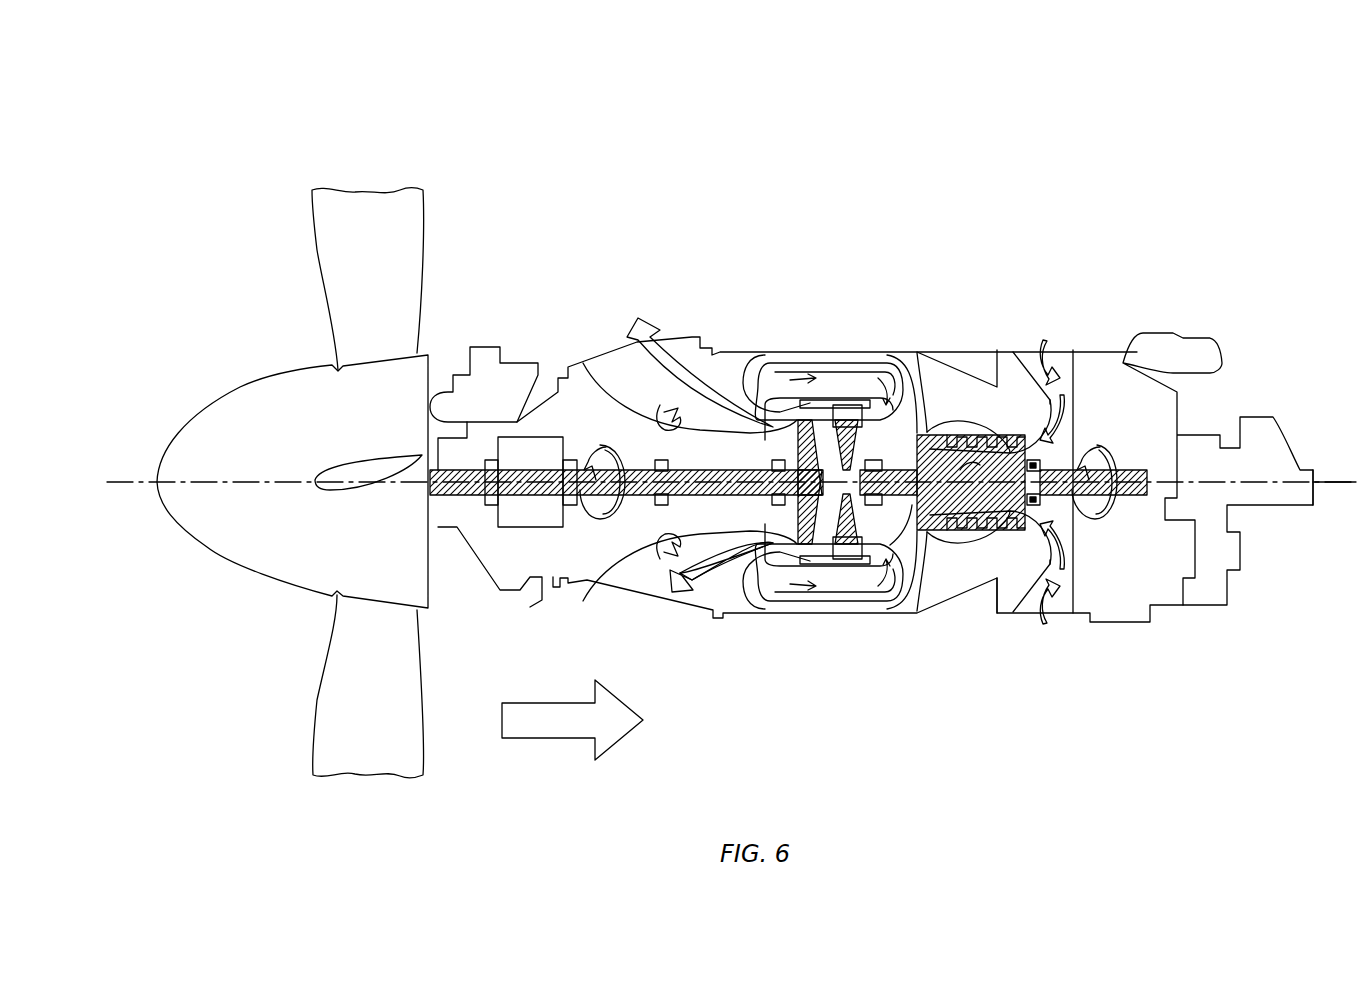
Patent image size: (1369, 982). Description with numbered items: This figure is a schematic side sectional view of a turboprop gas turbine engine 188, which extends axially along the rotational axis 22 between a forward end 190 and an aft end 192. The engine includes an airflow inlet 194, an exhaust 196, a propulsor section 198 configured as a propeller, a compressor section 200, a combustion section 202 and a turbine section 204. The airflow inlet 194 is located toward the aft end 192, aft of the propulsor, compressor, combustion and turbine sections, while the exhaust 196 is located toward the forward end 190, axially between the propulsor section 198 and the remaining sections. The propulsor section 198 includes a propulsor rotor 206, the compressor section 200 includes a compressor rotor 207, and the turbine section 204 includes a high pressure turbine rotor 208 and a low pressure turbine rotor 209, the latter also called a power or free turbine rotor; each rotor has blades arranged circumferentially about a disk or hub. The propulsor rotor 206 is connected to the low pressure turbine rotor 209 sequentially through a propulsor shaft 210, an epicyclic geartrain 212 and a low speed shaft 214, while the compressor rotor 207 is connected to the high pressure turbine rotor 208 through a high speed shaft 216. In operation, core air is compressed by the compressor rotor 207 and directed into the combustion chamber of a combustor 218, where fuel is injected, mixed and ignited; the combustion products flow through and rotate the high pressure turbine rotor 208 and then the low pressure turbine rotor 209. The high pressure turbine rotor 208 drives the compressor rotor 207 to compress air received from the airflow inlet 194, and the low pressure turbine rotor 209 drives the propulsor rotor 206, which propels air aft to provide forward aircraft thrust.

The rotational axis 22 is at (1340, 492).
The turboprop gas turbine engine 188 is at (1008, 130).
The forward end 190 is at (152, 484).
The aft end 192 is at (1313, 467).
The airflow inlet 194 is at (1065, 346).
The exhaust 196 is at (682, 335).
The propulsor section 198 is at (368, 173).
The compressor section 200 is at (977, 543).
The combustion section 202 is at (791, 350).
The turbine section 204 is at (828, 420).
The propulsor rotor 206 is at (337, 598).
The compressor rotor 207 is at (978, 434).
The high pressure turbine rotor 208 is at (882, 560).
The low pressure turbine rotor 209 is at (793, 505).
The propulsor shaft 210 is at (471, 470).
The epicyclic geartrain 212 is at (549, 430).
The low speed shaft 214 is at (642, 468).
The high speed shaft 216 is at (923, 567).
The combustor 218 is at (878, 362).